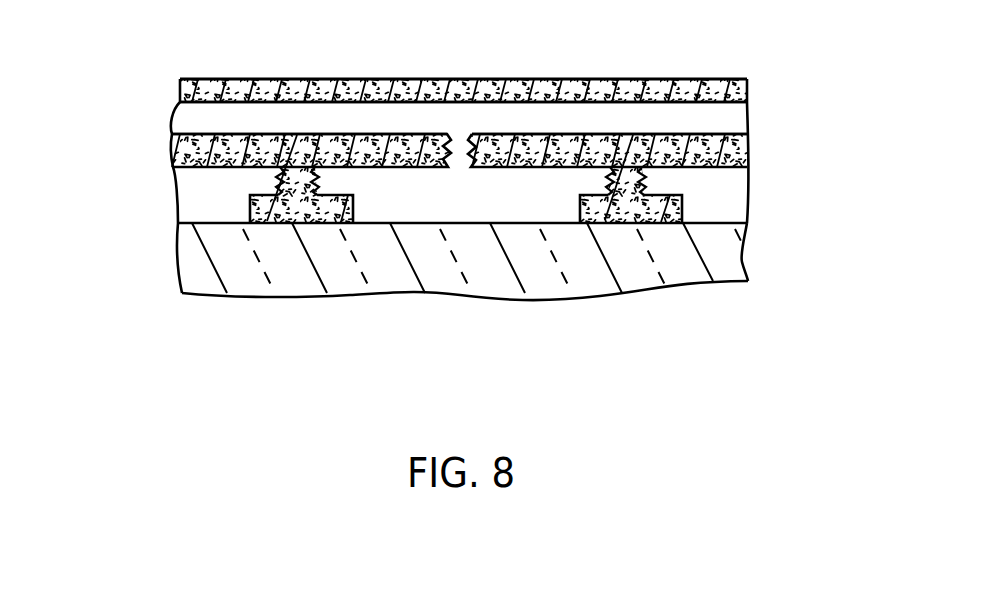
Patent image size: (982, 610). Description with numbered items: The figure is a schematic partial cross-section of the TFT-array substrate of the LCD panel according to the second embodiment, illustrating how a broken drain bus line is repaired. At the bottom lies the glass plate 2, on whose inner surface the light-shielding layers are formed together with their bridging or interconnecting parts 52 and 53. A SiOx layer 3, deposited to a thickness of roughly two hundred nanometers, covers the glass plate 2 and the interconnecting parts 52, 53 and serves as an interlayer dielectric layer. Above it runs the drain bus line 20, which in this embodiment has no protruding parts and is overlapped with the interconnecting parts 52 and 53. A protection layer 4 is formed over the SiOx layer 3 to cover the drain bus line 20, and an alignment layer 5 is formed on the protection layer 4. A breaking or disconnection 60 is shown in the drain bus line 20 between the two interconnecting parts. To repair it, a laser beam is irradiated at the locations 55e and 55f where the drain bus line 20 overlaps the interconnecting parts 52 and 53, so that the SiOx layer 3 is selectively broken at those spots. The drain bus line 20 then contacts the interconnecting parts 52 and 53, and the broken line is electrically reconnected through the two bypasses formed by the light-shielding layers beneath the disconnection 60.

The glass plate 2 is at (737, 265).
The SiOx layer 3 is at (193, 210).
The protection layer 4 is at (742, 118).
The alignment layer 5 is at (747, 89).
The drain bus line 20 is at (312, 134).
The interconnecting part 52 is at (283, 222).
The interconnecting part 53 is at (628, 222).
The location 55e is at (645, 180).
The location 55f is at (285, 183).
The disconnection 60 is at (462, 119).